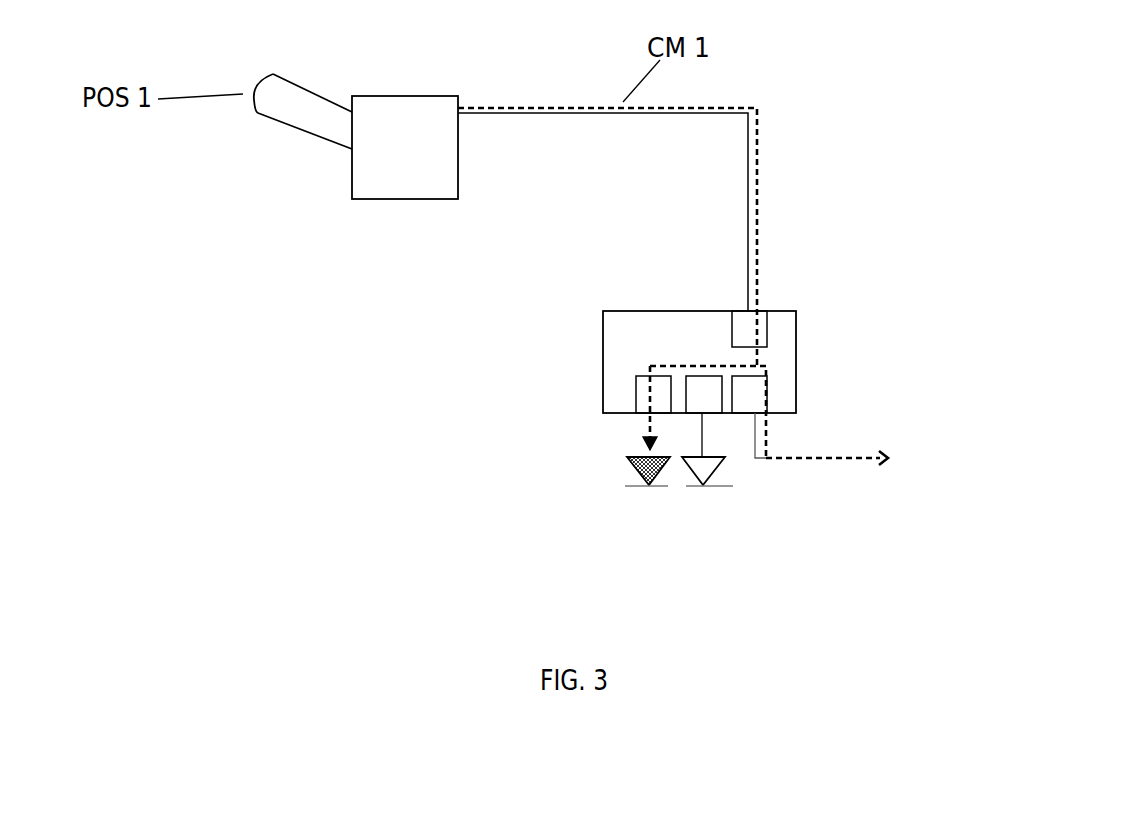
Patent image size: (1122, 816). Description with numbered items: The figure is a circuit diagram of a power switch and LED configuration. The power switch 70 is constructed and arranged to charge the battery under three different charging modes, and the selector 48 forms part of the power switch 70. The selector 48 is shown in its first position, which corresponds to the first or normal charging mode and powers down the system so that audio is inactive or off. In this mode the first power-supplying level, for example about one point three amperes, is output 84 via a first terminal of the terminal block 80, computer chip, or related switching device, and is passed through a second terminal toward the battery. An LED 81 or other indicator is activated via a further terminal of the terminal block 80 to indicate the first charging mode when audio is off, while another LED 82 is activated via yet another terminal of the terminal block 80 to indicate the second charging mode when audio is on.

The selector 48 is at (307, 85).
The power switch 70 is at (422, 166).
The terminal block 80 is at (603, 359).
The LED 81 is at (638, 473).
The LED 82 is at (693, 473).
The output 84 is at (773, 460).